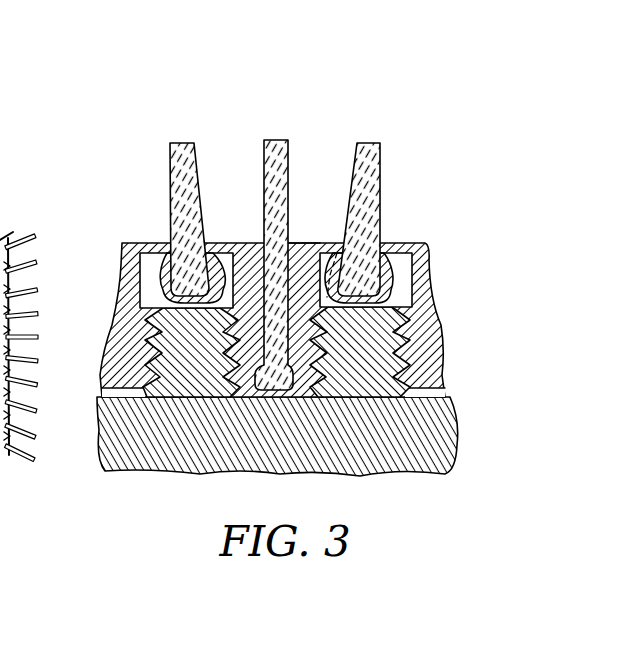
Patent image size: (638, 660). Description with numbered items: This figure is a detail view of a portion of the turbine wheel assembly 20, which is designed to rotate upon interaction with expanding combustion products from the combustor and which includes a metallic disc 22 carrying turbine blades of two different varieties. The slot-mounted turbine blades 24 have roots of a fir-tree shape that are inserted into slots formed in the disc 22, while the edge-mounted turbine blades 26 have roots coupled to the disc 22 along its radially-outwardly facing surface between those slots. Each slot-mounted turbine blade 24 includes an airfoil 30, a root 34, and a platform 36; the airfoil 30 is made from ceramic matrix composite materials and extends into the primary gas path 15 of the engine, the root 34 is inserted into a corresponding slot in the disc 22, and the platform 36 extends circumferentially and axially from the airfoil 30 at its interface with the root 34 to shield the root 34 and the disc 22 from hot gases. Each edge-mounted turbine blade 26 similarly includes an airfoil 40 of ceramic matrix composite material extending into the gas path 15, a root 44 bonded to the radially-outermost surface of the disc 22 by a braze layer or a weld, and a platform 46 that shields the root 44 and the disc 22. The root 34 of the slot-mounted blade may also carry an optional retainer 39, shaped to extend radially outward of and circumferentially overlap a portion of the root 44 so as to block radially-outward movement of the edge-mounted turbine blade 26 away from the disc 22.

The primary gas path 15 is at (467, 197).
The turbine wheel assembly 20 is at (435, 94).
The metallic disc 22 is at (92, 418).
The slot-mounted turbine blade 24 is at (226, 148).
The edge-mounted turbine blade 26 is at (128, 148).
The airfoil 30 is at (258, 152).
The root 34 is at (201, 316).
The platform 36 is at (298, 238).
The retainer 39 is at (326, 238).
The airfoil 40 is at (163, 152).
The root 44 is at (152, 280).
The platform 46 is at (162, 242).